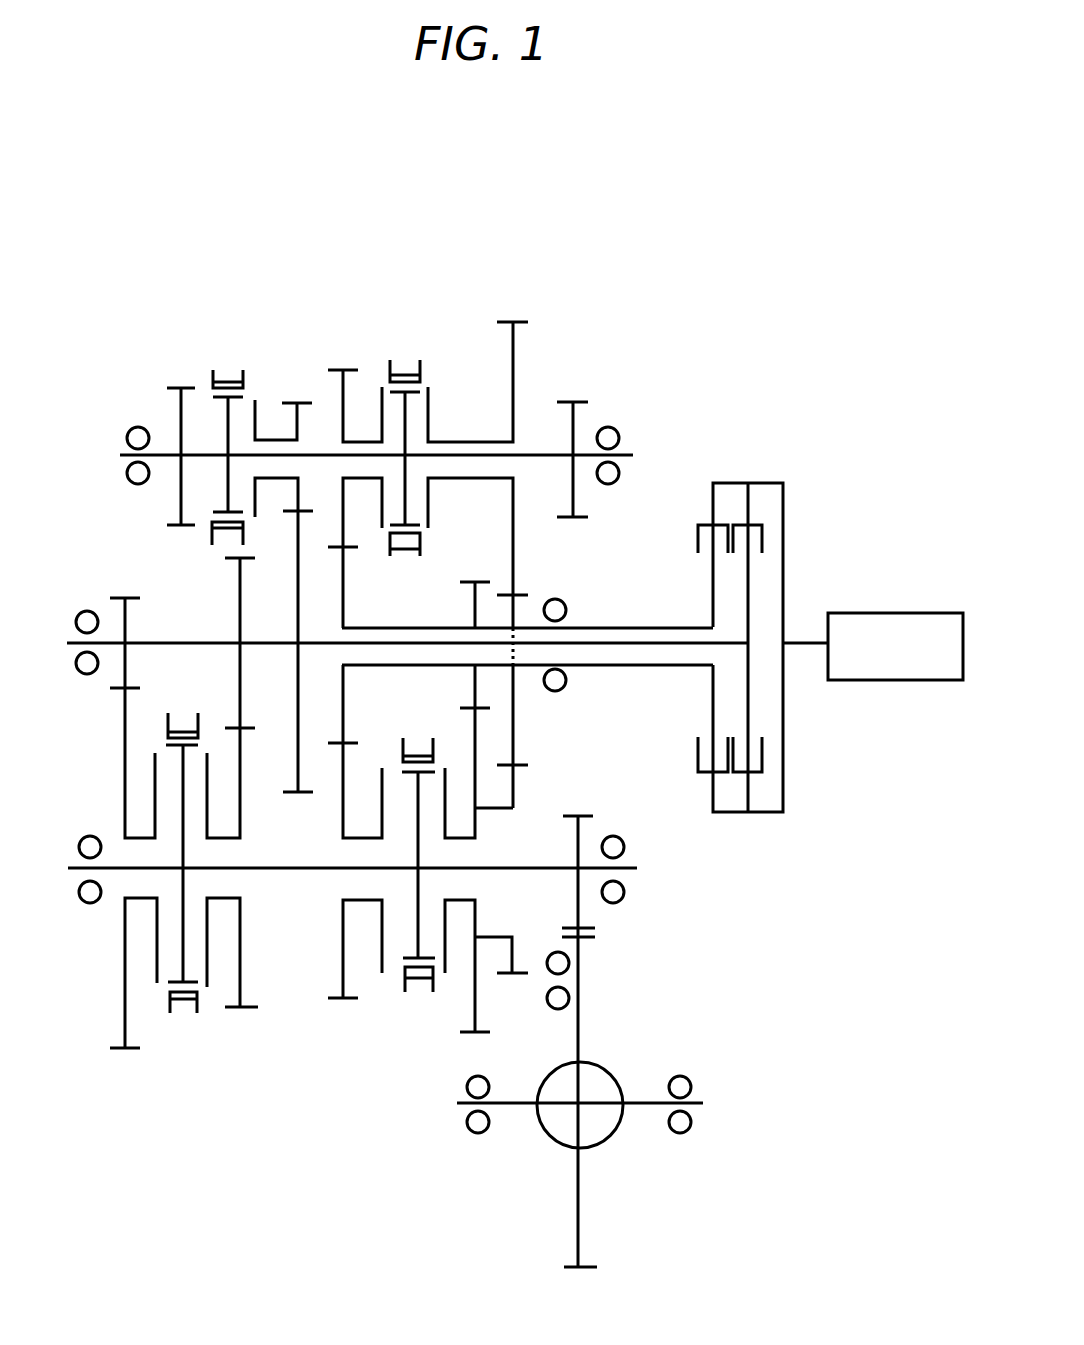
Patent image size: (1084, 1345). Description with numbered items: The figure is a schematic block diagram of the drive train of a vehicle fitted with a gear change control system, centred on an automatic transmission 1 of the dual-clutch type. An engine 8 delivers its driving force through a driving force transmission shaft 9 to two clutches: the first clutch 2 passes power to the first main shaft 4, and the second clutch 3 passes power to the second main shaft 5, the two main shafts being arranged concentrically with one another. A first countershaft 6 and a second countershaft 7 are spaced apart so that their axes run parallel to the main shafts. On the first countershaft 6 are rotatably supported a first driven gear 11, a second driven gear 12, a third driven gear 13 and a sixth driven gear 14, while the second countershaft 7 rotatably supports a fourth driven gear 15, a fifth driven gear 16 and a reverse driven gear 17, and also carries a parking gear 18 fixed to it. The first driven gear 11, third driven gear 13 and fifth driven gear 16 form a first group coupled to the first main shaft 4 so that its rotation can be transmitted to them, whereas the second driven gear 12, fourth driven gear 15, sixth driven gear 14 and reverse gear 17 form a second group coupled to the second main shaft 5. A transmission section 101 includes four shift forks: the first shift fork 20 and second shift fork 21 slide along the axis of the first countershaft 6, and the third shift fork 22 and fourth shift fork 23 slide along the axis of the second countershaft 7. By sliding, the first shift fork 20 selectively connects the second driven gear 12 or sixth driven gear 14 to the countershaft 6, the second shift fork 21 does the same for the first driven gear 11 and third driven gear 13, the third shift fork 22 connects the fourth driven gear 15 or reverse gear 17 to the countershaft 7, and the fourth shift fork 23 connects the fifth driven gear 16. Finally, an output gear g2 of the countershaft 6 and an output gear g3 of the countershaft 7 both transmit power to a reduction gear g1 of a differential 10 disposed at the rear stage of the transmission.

The automatic transmission 1 is at (700, 283).
The transmission section 101 is at (303, 250).
The first clutch 2 is at (765, 535).
The second clutch 3 is at (698, 527).
The first main shaft 4 is at (190, 641).
The second main shaft 5 is at (410, 627).
The first countershaft 6 is at (306, 866).
The second countershaft 7 is at (538, 453).
The engine 8 is at (940, 612).
The driving force transmission shaft 9 is at (803, 641).
The differential 10 is at (610, 1070).
The first driven gear 11 is at (123, 1002).
The second driven gear 12 is at (478, 983).
The third driven gear 13 is at (243, 985).
The sixth driven gear 14 is at (340, 922).
The fourth driven gear 15 is at (345, 420).
The fifth driven gear 16 is at (296, 422).
The reverse driven gear 17 is at (510, 390).
The parking gear 18 is at (178, 430).
The first shift fork 20 is at (418, 998).
The second shift fork 21 is at (183, 1012).
The third shift fork 22 is at (408, 370).
The fourth shift fork 23 is at (229, 370).
The reduction gear g1 is at (585, 967).
The output gear g2 is at (582, 835).
The output gear g3 is at (578, 428).